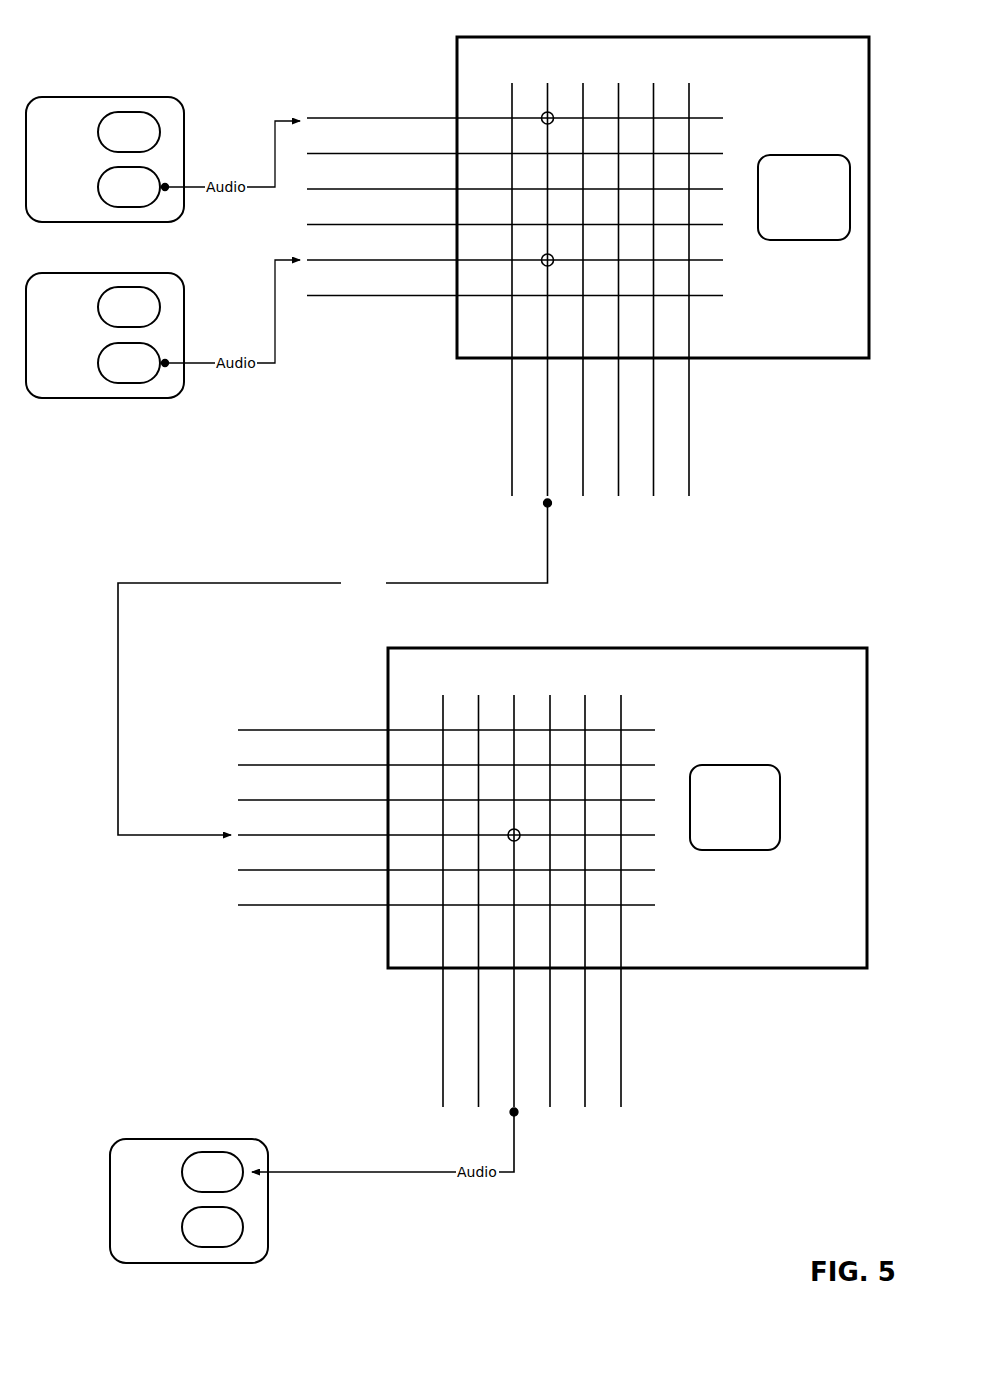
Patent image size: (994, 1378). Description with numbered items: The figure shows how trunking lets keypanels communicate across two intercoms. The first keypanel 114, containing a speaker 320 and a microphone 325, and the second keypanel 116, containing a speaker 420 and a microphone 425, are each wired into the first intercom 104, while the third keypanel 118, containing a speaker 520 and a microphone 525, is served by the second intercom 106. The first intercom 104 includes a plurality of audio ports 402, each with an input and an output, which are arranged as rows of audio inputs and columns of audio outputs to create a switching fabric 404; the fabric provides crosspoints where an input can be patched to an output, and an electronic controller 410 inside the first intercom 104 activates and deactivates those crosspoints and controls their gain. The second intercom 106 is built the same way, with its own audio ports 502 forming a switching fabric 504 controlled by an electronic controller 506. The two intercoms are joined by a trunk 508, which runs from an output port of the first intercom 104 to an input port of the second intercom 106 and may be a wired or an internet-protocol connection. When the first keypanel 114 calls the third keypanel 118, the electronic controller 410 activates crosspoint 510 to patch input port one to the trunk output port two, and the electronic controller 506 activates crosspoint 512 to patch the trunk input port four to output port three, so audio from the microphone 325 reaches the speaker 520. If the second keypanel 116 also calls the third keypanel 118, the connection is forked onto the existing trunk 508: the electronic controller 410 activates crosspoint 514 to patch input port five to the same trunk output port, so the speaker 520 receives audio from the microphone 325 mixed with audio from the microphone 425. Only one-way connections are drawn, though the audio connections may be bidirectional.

The first intercom 104 is at (870, 85).
The second intercom 106 is at (868, 665).
The first keypanel 114 is at (186, 109).
The second keypanel 116 is at (186, 285).
The third keypanel 118 is at (111, 1200).
The speaker 320 is at (98, 133).
The microphone 325 is at (98, 187).
The speaker 420 is at (98, 309).
The microphone 425 is at (98, 363).
The speaker 520 is at (181, 1172).
The microphone 525 is at (181, 1227).
The audio ports 402 is at (320, 78).
The switching fabric 404 is at (730, 98).
The electronic controller 410 is at (804, 197).
The audio ports 502 is at (247, 691).
The switching fabric 504 is at (661, 709).
The electronic controller 506 is at (782, 807).
The trunk 508 is at (304, 583).
The crosspoint 510 is at (560, 109).
The crosspoint 512 is at (500, 841).
The crosspoint 514 is at (538, 274).